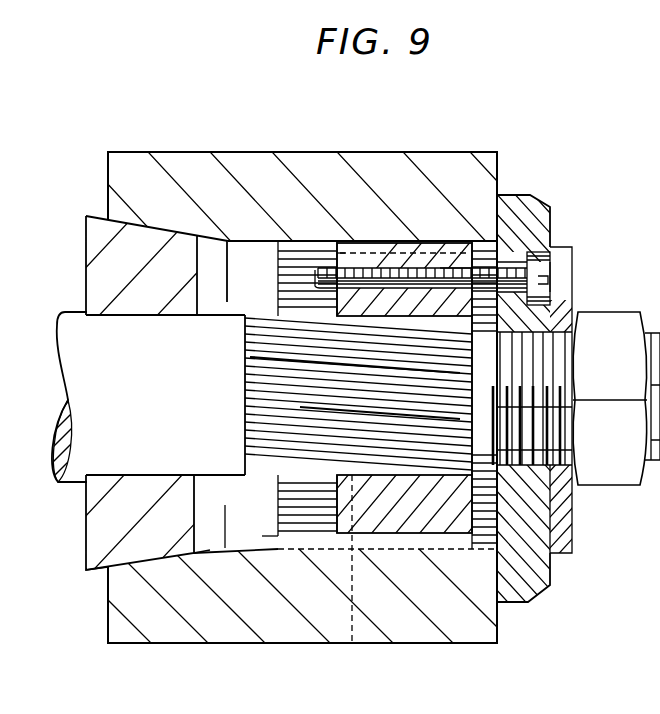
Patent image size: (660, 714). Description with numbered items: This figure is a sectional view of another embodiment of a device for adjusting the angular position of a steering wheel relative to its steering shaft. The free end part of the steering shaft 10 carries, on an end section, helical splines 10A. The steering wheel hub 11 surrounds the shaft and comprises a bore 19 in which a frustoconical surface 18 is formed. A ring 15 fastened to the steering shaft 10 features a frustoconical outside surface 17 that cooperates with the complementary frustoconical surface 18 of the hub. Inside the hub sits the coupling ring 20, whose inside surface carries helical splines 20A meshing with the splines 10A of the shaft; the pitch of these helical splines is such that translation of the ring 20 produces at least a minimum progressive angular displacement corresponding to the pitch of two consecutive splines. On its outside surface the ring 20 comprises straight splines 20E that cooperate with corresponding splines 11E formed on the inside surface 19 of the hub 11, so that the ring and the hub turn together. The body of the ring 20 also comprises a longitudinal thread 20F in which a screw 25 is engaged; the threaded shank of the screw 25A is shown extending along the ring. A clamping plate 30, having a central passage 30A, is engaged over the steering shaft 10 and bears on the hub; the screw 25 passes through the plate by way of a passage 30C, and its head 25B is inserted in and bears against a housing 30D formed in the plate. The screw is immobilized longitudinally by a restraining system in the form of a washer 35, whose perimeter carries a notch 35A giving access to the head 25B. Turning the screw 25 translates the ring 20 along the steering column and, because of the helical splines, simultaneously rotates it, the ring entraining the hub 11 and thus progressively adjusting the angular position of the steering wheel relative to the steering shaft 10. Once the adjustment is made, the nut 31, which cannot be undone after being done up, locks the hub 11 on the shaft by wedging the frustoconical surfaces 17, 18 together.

The steering shaft 10 is at (128, 401).
The helical splines 10A is at (272, 429).
The steering wheel hub 11 is at (210, 190).
The splines 11E is at (300, 241).
The ring 15 is at (86, 557).
The frustoconical outside surface 17 is at (95, 573).
The frustoconical surface 18 is at (207, 552).
The bore 19 is at (296, 540).
The ring 20 is at (400, 500).
The helical splines 20A is at (352, 643).
The straight splines 20E is at (362, 243).
The longitudinal thread 20F is at (391, 253).
The screw 25 is at (433, 268).
The screw thread 25A is at (463, 241).
The head 25B is at (560, 275).
The clamping plate 30 is at (537, 578).
The central passage 30A is at (548, 490).
The passage 30C is at (510, 258).
The housing 30D is at (546, 320).
The nut 31 is at (628, 482).
The washer 35 is at (577, 310).
The notch 35A is at (566, 283).